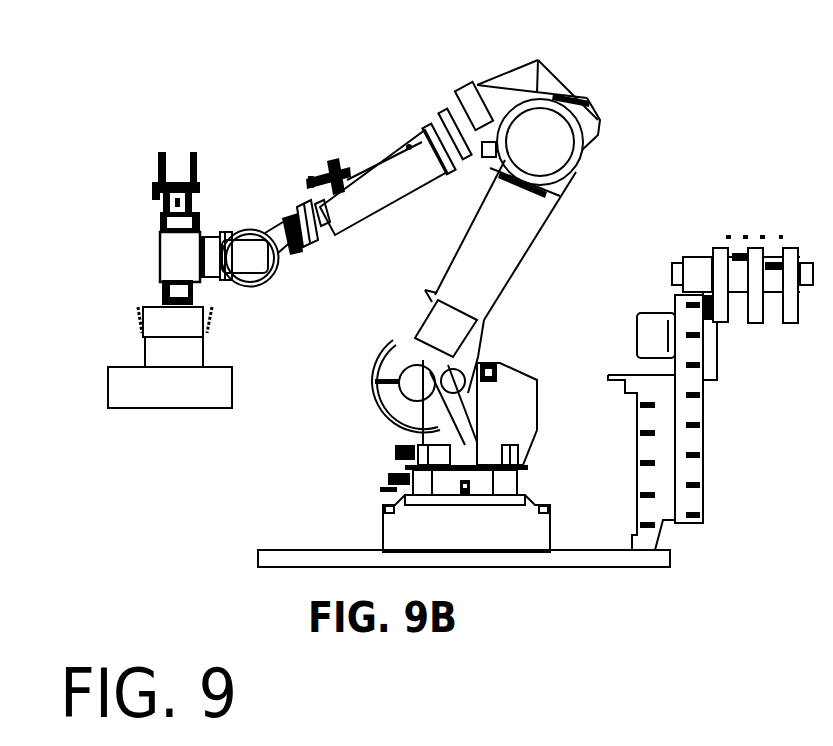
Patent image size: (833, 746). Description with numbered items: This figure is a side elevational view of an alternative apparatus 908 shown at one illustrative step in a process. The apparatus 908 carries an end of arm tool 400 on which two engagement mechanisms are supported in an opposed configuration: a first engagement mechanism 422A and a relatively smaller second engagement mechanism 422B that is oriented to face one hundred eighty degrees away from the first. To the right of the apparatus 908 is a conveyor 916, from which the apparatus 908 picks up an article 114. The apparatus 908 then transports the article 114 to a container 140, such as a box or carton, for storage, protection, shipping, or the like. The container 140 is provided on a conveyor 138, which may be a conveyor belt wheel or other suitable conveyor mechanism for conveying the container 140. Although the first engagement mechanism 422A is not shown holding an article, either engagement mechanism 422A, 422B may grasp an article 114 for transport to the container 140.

The end of arm tool 400 is at (128, 128).
The first engagement mechanism 422A is at (138, 186).
The second engagement mechanism 422B is at (151, 275).
The article 114 is at (149, 287).
The container 140 is at (207, 357).
The conveyor 138 is at (137, 410).
The apparatus 908 is at (548, 46).
The conveyor 916 is at (745, 376).